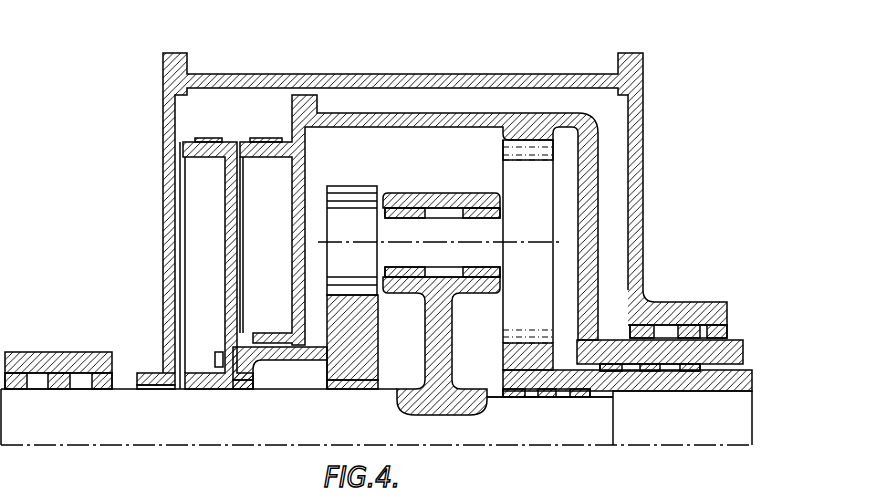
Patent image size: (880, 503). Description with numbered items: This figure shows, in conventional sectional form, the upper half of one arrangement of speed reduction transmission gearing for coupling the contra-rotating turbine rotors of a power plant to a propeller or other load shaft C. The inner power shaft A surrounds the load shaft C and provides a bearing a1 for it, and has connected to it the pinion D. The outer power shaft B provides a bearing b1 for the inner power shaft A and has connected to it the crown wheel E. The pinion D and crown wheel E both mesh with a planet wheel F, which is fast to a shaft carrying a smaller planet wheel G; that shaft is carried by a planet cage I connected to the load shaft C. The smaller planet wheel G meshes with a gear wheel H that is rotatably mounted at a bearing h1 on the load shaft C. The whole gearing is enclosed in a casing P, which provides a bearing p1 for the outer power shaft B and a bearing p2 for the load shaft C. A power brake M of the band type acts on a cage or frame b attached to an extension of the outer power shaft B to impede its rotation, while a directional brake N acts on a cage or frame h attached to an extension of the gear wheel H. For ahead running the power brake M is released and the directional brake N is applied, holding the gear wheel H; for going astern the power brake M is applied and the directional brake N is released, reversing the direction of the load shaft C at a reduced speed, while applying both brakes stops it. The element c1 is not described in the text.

The casing P is at (481, 74).
The bearing p1 is at (686, 318).
The bearing p2 is at (144, 392).
The cage or frame b is at (297, 258).
The outer power shaft B is at (728, 342).
The bearing b1 is at (633, 392).
The power brake M is at (277, 140).
The directional brake N is at (221, 140).
The cage or frame h is at (227, 290).
The bearing h1 is at (330, 392).
The smaller planet wheel G is at (338, 196).
The gear wheel H is at (372, 332).
The planet cage I is at (452, 324).
The planet wheel F is at (510, 173).
The crown wheel E is at (518, 136).
The pinion D is at (507, 348).
The inner power shaft A is at (678, 384).
The bearing a1 is at (538, 398).
The load shaft C is at (573, 428).
The support block c1 is at (80, 392).